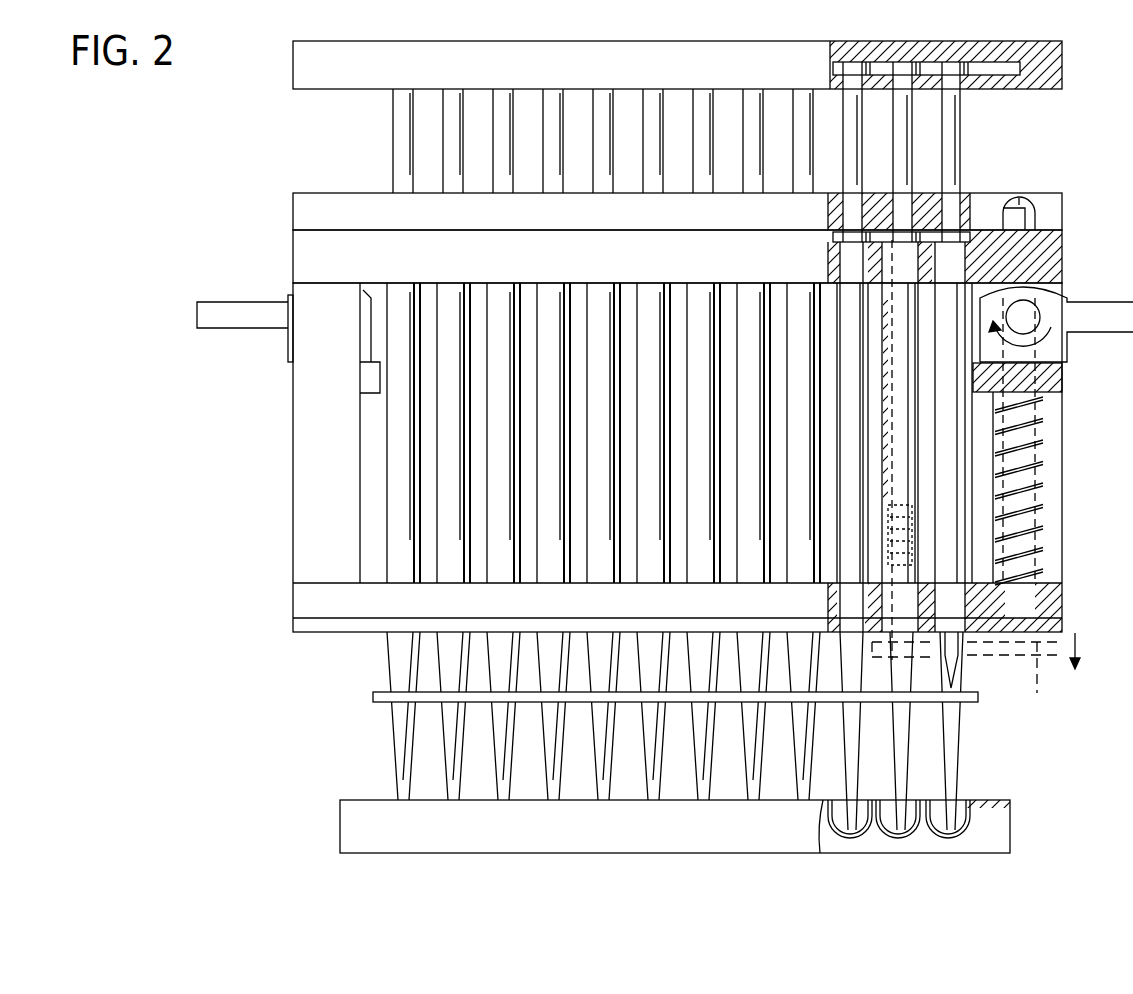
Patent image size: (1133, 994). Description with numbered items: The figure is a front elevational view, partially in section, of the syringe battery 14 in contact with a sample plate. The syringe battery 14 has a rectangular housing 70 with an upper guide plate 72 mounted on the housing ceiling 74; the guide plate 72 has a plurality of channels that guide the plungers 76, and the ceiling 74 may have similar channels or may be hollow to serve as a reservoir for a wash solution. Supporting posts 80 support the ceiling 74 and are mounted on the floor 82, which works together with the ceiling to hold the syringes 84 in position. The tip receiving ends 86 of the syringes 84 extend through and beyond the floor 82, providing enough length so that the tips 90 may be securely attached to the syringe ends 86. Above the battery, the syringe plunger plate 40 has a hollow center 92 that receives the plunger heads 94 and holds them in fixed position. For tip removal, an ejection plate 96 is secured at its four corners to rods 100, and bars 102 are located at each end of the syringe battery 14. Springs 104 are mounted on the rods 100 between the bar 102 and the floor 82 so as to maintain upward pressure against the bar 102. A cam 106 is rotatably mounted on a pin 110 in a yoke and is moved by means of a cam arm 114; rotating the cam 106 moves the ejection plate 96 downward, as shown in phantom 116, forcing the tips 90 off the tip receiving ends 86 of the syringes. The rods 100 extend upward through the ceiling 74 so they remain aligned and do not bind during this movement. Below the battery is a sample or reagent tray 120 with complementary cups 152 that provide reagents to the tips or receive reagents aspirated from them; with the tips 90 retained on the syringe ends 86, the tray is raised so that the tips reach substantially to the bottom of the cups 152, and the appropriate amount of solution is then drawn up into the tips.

The syringe battery 14 is at (1082, 210).
The syringe plunger plate 40 is at (1063, 59).
The rectangular housing 70 is at (312, 430).
The upper guide plate 72 is at (300, 208).
The housing ceiling 74 is at (306, 255).
The plungers 76 is at (905, 162).
The supporting posts 80 is at (312, 346).
The floor 82 is at (322, 598).
The syringes 84 is at (400, 485).
The tip receiving ends 86 is at (963, 650).
The tips 90 is at (905, 760).
The hollow center 92 is at (995, 62).
The plunger heads 94 is at (900, 65).
The ejection plate 96 is at (1058, 624).
The rods 100 is at (1040, 485).
The bars 102 is at (373, 373).
The springs 104 is at (1045, 430).
The cam 106 is at (1058, 298).
The pin 110 is at (1036, 324).
The cam arm 114 is at (215, 315).
The phantom 116 is at (1037, 678).
The sample or reagent tray 120 is at (1000, 828).
The cups 152 is at (910, 810).